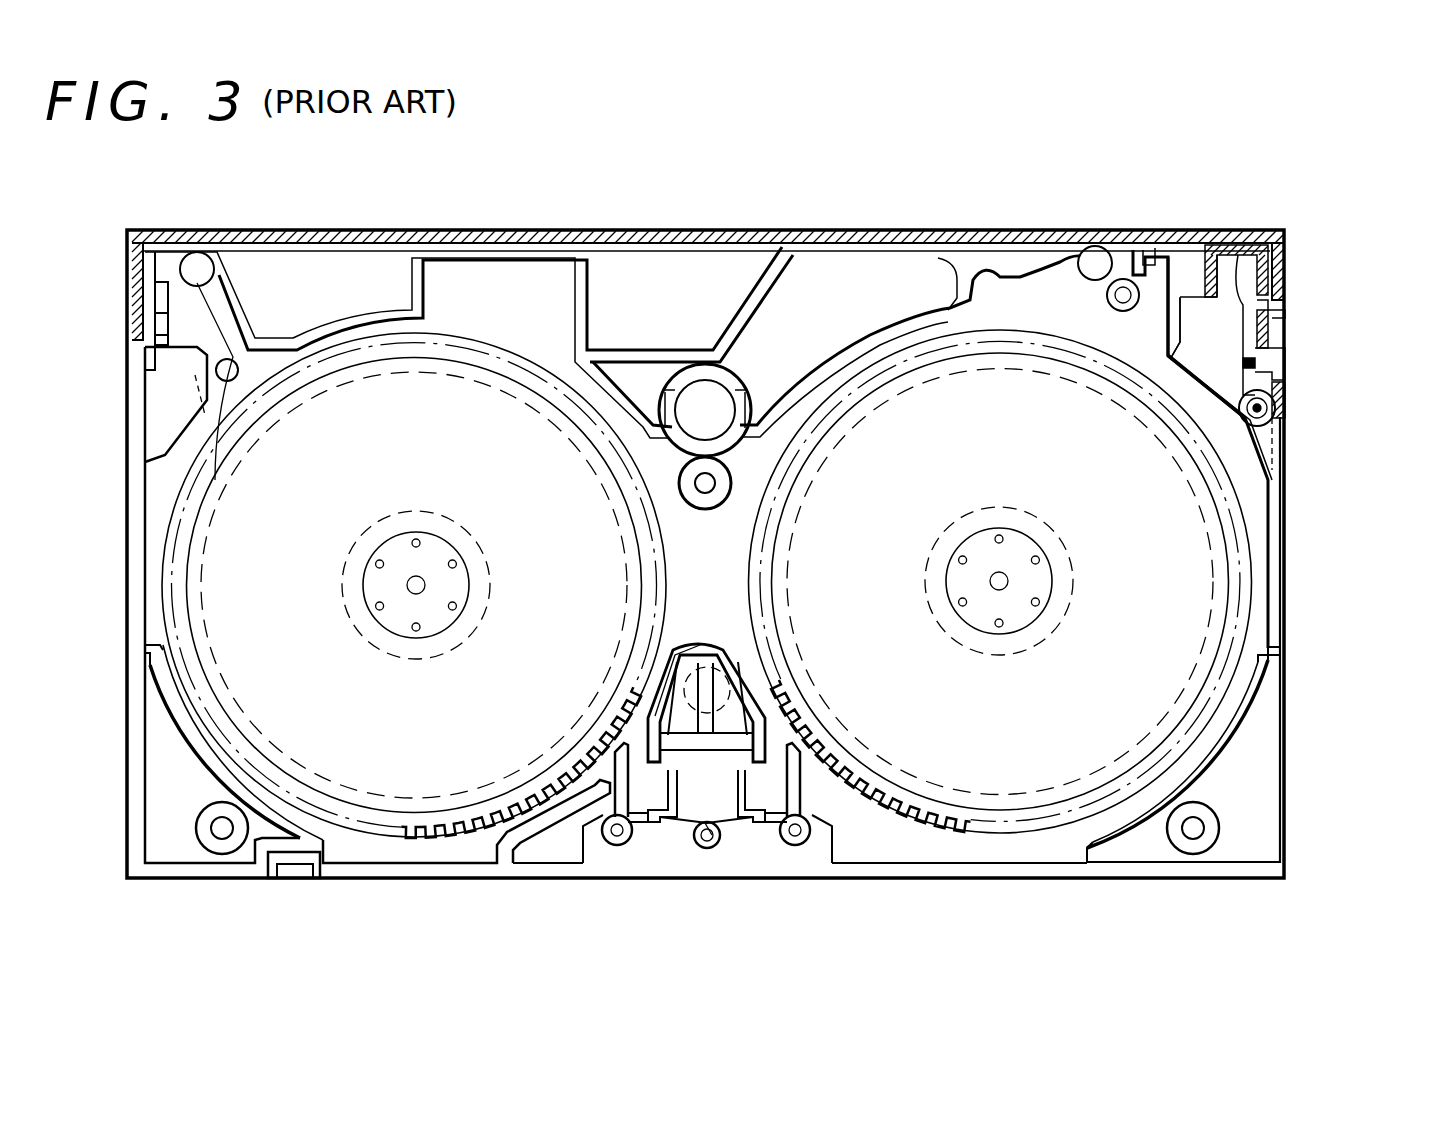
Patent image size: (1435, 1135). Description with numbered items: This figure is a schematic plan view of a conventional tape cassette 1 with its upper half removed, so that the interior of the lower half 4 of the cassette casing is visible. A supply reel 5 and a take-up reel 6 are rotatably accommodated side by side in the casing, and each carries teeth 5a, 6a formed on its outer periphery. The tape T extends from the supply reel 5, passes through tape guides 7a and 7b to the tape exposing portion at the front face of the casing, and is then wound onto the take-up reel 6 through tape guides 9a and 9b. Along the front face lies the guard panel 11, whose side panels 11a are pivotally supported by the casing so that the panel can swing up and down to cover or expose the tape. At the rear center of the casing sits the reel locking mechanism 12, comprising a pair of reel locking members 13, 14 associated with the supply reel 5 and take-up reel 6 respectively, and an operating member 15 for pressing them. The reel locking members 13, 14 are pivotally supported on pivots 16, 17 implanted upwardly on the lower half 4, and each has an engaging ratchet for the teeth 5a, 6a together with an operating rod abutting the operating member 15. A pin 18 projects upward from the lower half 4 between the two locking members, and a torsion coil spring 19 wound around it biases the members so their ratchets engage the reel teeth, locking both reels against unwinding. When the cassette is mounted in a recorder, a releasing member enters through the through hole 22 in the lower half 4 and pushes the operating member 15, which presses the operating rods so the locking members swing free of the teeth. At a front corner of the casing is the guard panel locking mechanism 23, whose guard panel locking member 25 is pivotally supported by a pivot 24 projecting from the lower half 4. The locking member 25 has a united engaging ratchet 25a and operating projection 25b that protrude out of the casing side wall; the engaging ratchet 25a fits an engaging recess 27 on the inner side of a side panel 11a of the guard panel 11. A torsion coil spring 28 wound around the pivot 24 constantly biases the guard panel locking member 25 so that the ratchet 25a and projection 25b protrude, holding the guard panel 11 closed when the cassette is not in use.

The tape cassette 1 is at (266, 896).
The lower half 4 is at (1113, 878).
The supply reel 5 is at (428, 765).
The teeth 5a is at (492, 832).
The take-up reel 6 is at (1020, 765).
The teeth 6a is at (938, 832).
The tape guide 7a is at (215, 372).
The tape guide 7b is at (197, 268).
The tape T is at (205, 315).
The tape guide 9a is at (1094, 262).
The tape guide 9b is at (1125, 290).
The guard panel 11 is at (736, 230).
The side panel 11a is at (130, 272).
The reel locking mechanism 12 is at (680, 840).
The reel locking member 13 is at (606, 838).
The reel locking member 14 is at (808, 810).
The operating member 15 is at (680, 720).
The pivot 16 is at (640, 832).
The pivot 17 is at (795, 845).
The pin 18 is at (707, 848).
The torsion coil spring 19 is at (718, 840).
The through hole 22 is at (745, 685).
The guard panel locking mechanism 23 is at (1210, 345).
The pivot 24 is at (1275, 415).
The guard panel locking member 25 is at (1232, 245).
The engaging ratchet 25a is at (1286, 312).
The operating projection 25b is at (1286, 374).
The engaging recess 27 is at (1290, 328).
The torsion coil spring 28 is at (1250, 430).